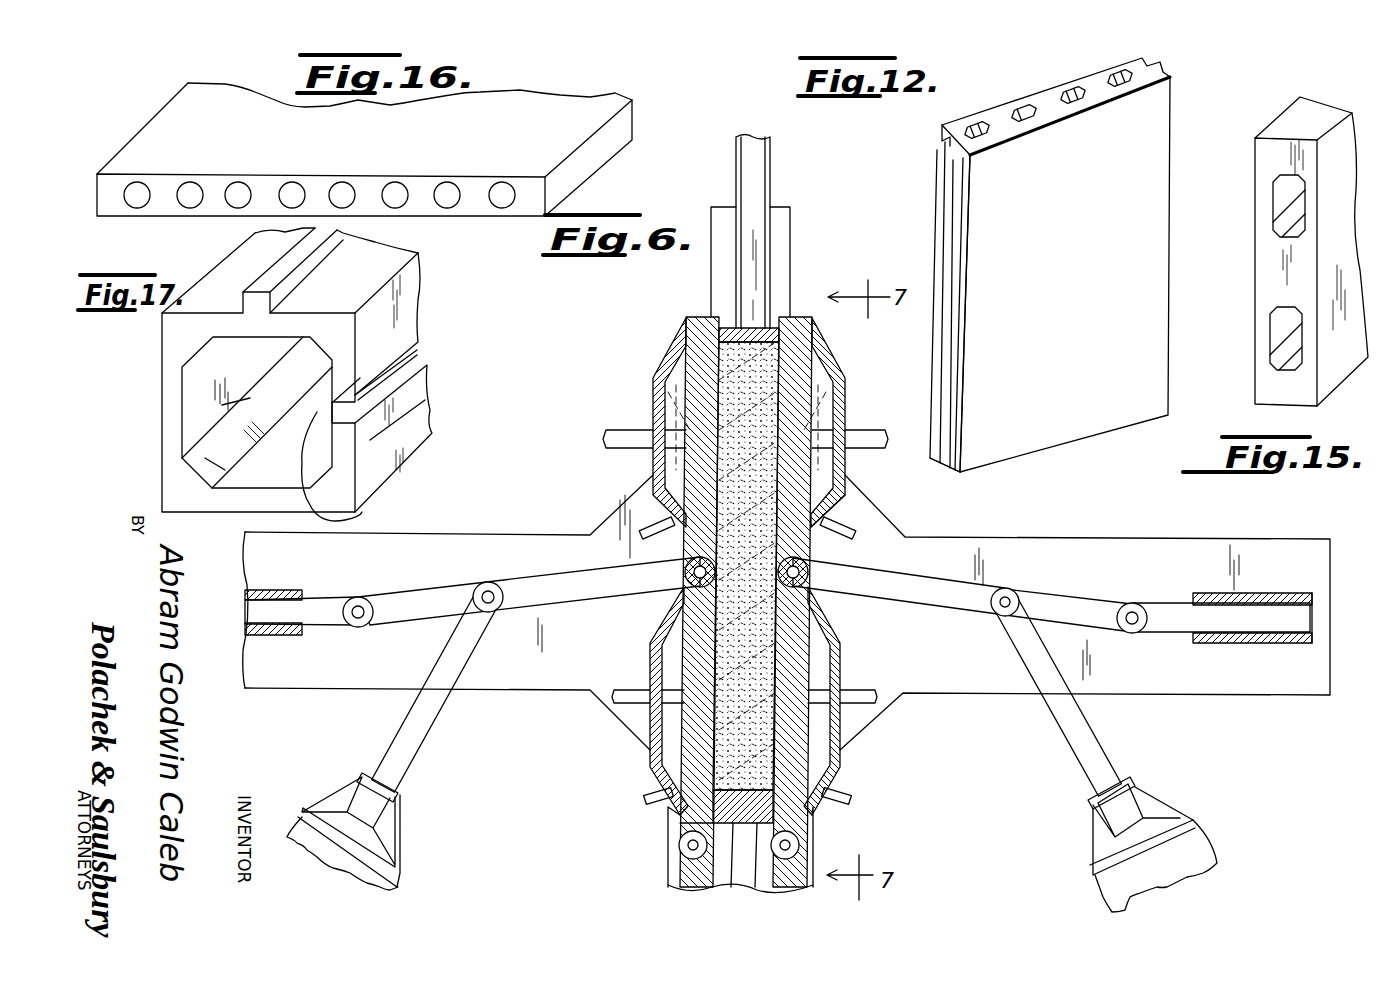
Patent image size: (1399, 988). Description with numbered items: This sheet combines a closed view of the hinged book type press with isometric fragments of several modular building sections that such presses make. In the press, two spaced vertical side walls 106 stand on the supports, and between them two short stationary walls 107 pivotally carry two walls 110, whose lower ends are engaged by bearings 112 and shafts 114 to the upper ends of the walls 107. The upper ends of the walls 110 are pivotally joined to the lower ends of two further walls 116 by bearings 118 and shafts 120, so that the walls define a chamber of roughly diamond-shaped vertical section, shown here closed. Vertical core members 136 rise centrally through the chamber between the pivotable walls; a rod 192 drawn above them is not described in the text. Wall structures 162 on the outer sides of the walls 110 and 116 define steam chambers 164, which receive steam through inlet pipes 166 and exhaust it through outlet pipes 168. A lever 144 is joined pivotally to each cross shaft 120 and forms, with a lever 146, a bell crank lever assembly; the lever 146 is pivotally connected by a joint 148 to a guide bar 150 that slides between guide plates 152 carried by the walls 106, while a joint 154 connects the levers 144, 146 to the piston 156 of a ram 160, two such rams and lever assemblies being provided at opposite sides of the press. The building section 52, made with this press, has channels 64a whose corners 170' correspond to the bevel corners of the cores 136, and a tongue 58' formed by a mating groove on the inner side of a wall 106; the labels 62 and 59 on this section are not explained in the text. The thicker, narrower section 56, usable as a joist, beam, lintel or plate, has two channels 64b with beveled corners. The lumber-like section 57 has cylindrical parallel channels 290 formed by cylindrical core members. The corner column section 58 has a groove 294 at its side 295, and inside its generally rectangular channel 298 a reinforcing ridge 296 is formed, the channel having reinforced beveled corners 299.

In FIG. 16, the modular section S7 57 is at (228, 105).
In FIG. 16, the cylindrical parallel channels 290 is at (237, 198).
In FIG. 17, the modular section S8 58 is at (264, 370).
In FIG. 17, the channel 298 is at (220, 405).
In FIG. 17, the reinforced beveled corners 299 is at (213, 463).
In FIG. 17, the groove 294 is at (418, 361).
In FIG. 17, the adjacent side 295 is at (410, 416).
In FIG. 17, the reinforcing ridge 296 is at (355, 514).
In FIG. 6, the vertical side walls 106 is at (872, 536).
In FIG. 6, the rod 192 is at (757, 153).
In FIG. 6, the core members 136 is at (737, 176).
In FIG. 6, the walls 110 is at (703, 635).
In FIG. 6, the modular building section S2 52 is at (727, 725).
In FIG. 12, the modular building section S2 52 is at (925, 213).
In FIG. 6, the walls 116 is at (717, 403).
In FIG. 6, the steam chambers 164 is at (661, 728).
In FIG. 6, the short vertical walls 107 is at (690, 873).
In FIG. 6, the inlet pipes 166 is at (866, 430).
In FIG. 6, the outlet pipes 168 is at (837, 515).
In FIG. 6, the wall structures 162 is at (652, 678).
In FIG. 6, the lever 144 is at (940, 588).
In FIG. 6, the shafts 120 is at (807, 562).
In FIG. 6, the bearings 118 is at (803, 582).
In FIG. 6, the lever 146 is at (1085, 607).
In FIG. 6, the joint 154 is at (998, 613).
In FIG. 6, the joint 148 is at (1140, 627).
In FIG. 6, the guide bar 150 is at (1160, 625).
In FIG. 6, the guide plates 152 is at (1250, 595).
In FIG. 6, the piston 156 is at (1098, 744).
In FIG. 6, the ram 160 is at (382, 877).
In FIG. 6, the shafts 114 is at (686, 847).
In FIG. 6, the bearings 112 is at (690, 858).
In FIG. 12, the panel 62 is at (1143, 183).
In FIG. 12, the tongue 58' is at (920, 313).
In FIG. 12, the channels 64a is at (1077, 84).
In FIG. 12, the corners 170' is at (979, 105).
In FIG. 15, the corners 170' is at (1257, 299).
In FIG. 12, the tongue 59 is at (951, 432).
In FIG. 15, the modular section S6 56 is at (1335, 262).
In FIG. 15, the channels 64b is at (1283, 197).